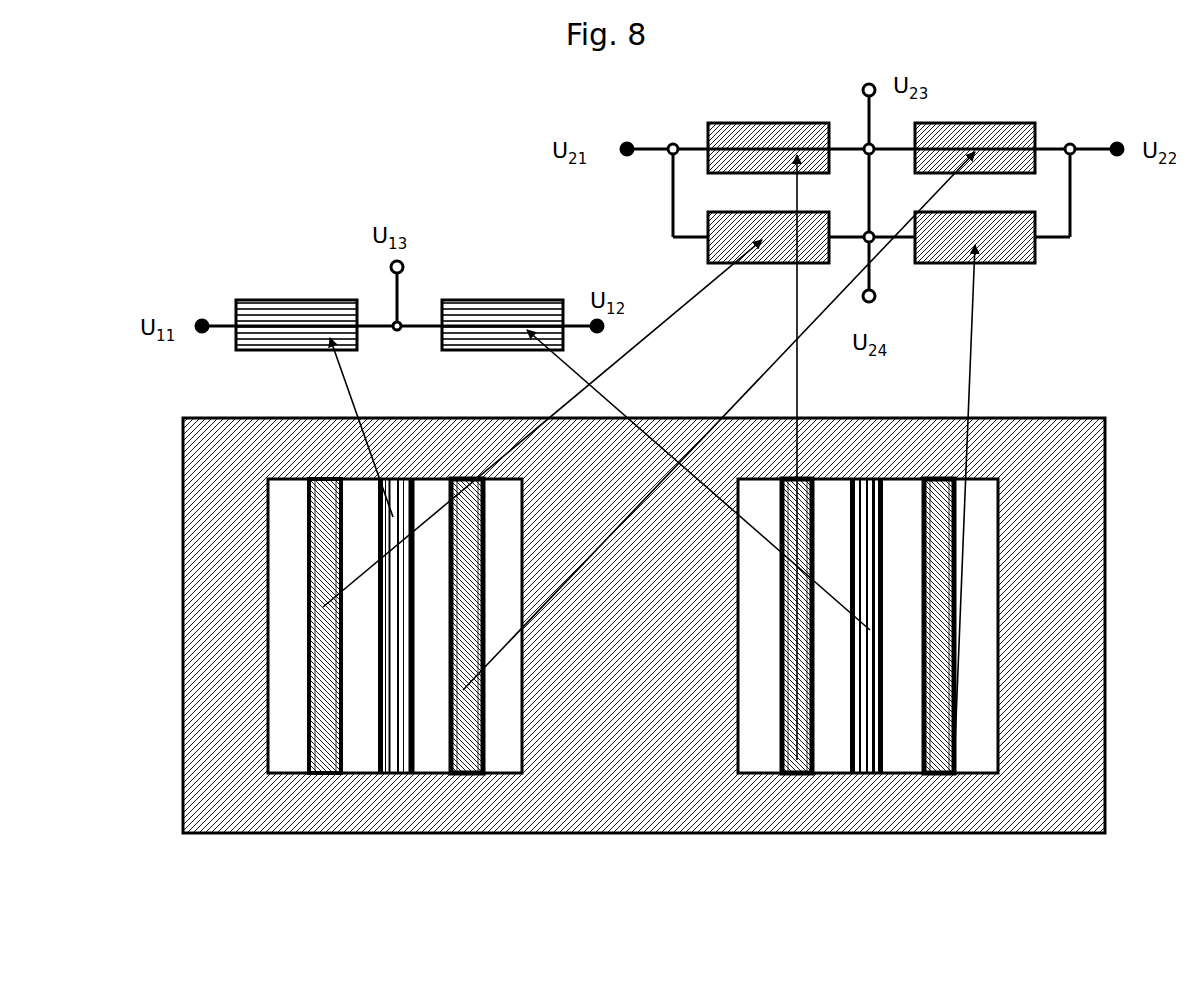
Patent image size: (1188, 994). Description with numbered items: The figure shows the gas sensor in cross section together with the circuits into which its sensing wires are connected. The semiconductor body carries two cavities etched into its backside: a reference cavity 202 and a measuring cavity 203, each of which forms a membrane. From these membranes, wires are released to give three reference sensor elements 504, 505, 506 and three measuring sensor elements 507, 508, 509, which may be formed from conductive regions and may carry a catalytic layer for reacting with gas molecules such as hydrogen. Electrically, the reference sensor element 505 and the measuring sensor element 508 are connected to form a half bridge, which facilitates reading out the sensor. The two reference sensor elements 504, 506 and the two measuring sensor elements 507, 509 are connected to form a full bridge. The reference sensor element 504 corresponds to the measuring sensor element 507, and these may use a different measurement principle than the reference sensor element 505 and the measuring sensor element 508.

The reference cavity 202 is at (978, 750).
The measuring cavity 203 is at (360, 737).
The reference sensor element 504 is at (794, 750).
The reference sensor element 505 is at (867, 750).
The reference sensor element 506 is at (940, 750).
The measuring sensor element 507 is at (325, 717).
The measuring sensor element 508 is at (399, 740).
The measuring sensor element 509 is at (467, 715).